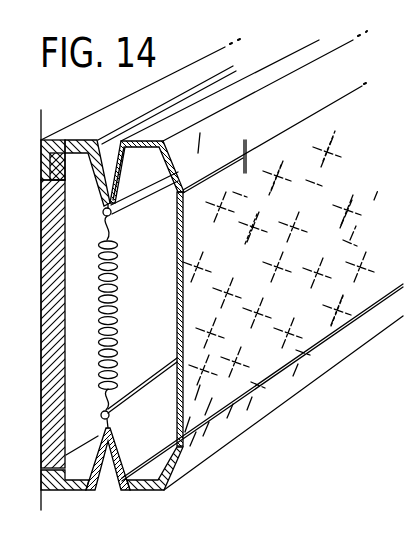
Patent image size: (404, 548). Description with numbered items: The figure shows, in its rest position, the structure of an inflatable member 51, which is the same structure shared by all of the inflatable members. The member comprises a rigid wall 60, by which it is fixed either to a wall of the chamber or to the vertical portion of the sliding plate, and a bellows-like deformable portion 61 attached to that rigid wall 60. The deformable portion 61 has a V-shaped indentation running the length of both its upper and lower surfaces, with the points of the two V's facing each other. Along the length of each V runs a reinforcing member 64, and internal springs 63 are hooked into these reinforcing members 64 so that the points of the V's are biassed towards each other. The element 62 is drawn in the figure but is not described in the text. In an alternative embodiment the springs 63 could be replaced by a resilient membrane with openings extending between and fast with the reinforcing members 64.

The inflatable member 51 is at (207, 393).
The rigid wall 60 is at (60, 227).
The bellows-like deformable portion 61 is at (182, 293).
The bottom fold 62 is at (124, 475).
The internal spring 63 is at (100, 276).
The reinforcing member 64 is at (133, 197).